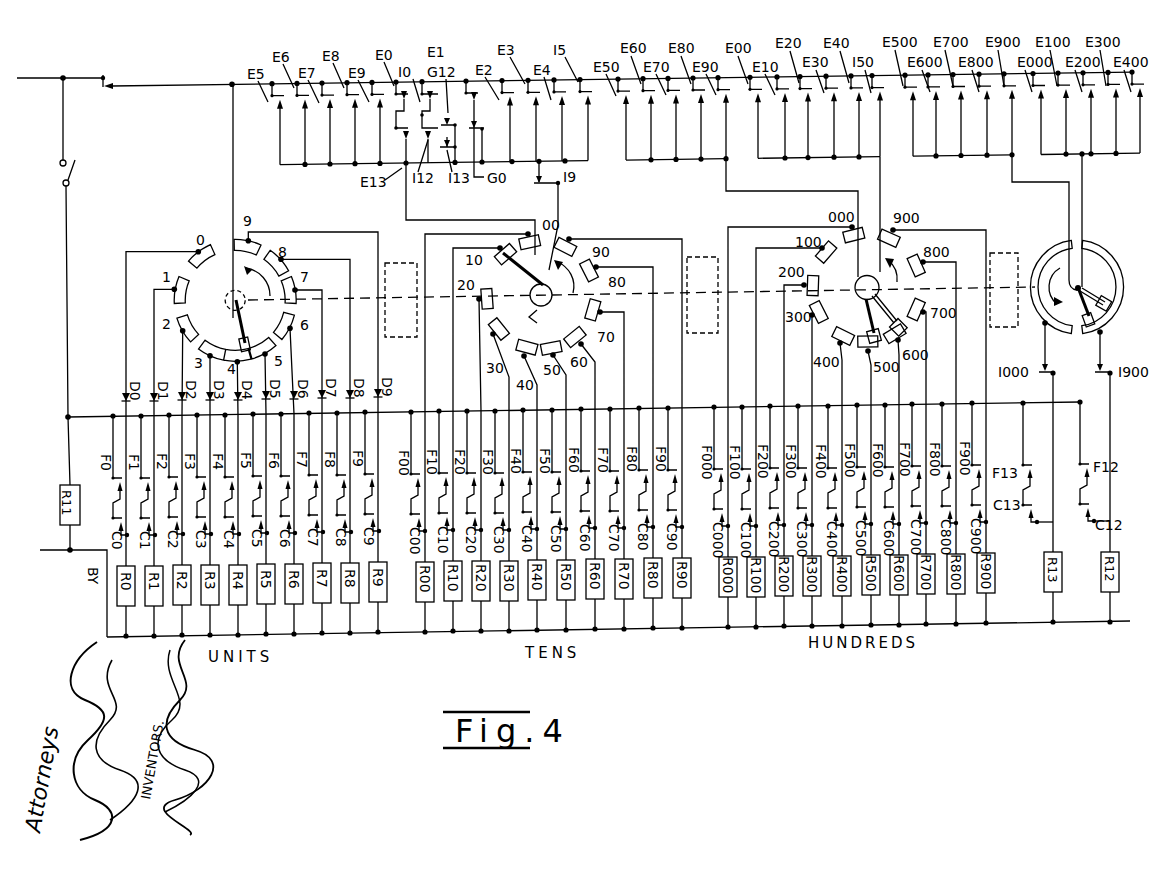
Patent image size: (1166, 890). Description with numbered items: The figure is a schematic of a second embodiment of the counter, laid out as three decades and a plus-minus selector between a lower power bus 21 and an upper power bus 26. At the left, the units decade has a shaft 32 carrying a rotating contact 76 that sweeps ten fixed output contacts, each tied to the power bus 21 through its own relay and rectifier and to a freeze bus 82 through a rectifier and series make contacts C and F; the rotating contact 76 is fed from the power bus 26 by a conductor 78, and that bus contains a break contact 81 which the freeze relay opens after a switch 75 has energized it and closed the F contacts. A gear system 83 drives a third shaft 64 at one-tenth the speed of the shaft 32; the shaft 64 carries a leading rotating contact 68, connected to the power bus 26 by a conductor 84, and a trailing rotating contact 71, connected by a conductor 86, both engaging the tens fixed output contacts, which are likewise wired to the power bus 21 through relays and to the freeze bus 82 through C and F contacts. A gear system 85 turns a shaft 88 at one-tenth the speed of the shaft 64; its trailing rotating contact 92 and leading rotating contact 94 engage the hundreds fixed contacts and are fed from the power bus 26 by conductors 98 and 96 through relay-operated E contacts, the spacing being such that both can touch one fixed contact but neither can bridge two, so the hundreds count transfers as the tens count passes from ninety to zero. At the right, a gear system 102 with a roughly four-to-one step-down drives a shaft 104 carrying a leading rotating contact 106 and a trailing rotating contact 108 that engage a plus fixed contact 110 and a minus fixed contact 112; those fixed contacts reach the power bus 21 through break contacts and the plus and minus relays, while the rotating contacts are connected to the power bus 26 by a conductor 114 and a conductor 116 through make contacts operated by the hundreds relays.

The power bus 21 is at (318, 638).
The power bus 26 is at (212, 80).
The shaft 32 is at (222, 300).
The third shaft 64 is at (551, 297).
The leading rotating contact 68 is at (541, 295).
The trailing rotating contact 71 is at (530, 269).
The switch 75 is at (81, 247).
The rotating contact 76 is at (240, 340).
The conductor 78 is at (233, 168).
The break contact 81 is at (72, 95).
The freeze bus 82 is at (92, 415).
The gear system 83 is at (412, 262).
The conductor 84 is at (553, 228).
The gear system 85 is at (713, 257).
The conductor 86 is at (404, 205).
The shaft 88 is at (860, 281).
The trailing rotating contact 92 is at (871, 328).
The leading rotating contact 94 is at (890, 318).
The conductor 96 is at (881, 203).
The conductor 98 is at (777, 197).
The gear system 102 is at (1010, 243).
The shaft 104 is at (1092, 278).
The leading rotating contact 106 is at (1096, 296).
The trailing rotating contact 108 is at (1074, 308).
The plus fixed contact 110 is at (1121, 292).
The minus fixed contact 112 is at (1033, 313).
The conductor 114 is at (1085, 210).
The conductor 116 is at (1068, 212).